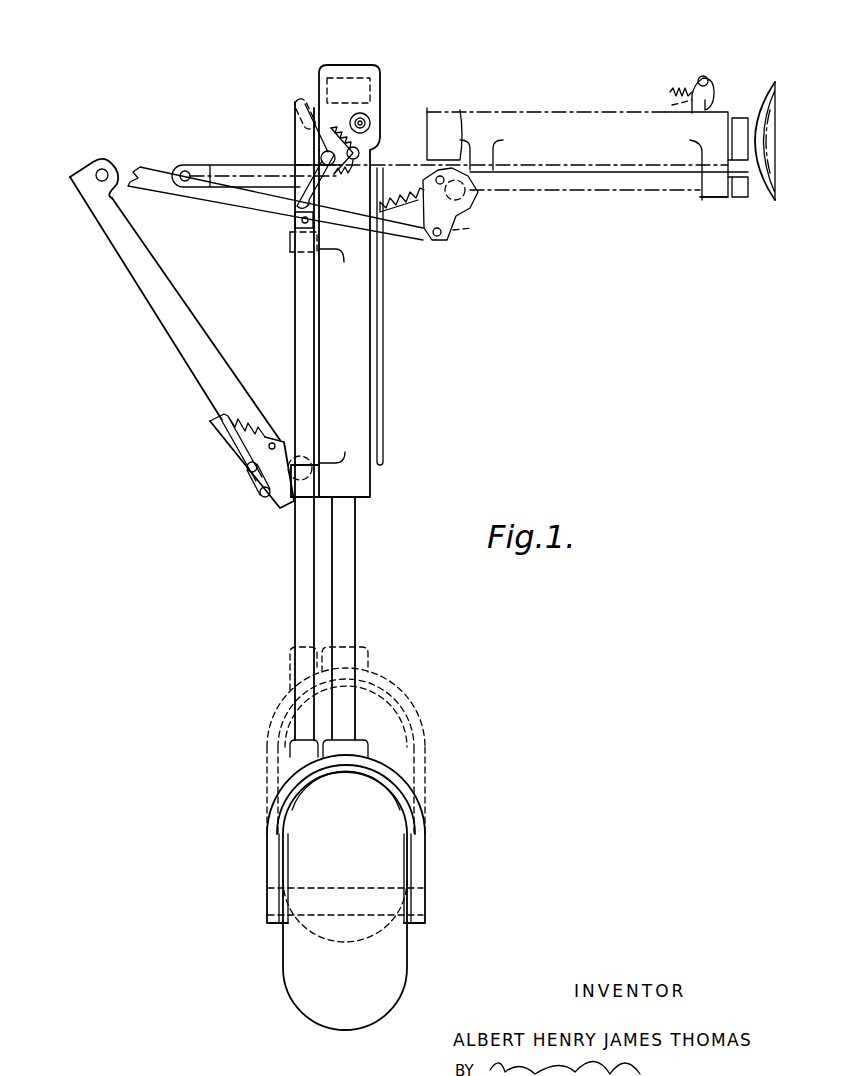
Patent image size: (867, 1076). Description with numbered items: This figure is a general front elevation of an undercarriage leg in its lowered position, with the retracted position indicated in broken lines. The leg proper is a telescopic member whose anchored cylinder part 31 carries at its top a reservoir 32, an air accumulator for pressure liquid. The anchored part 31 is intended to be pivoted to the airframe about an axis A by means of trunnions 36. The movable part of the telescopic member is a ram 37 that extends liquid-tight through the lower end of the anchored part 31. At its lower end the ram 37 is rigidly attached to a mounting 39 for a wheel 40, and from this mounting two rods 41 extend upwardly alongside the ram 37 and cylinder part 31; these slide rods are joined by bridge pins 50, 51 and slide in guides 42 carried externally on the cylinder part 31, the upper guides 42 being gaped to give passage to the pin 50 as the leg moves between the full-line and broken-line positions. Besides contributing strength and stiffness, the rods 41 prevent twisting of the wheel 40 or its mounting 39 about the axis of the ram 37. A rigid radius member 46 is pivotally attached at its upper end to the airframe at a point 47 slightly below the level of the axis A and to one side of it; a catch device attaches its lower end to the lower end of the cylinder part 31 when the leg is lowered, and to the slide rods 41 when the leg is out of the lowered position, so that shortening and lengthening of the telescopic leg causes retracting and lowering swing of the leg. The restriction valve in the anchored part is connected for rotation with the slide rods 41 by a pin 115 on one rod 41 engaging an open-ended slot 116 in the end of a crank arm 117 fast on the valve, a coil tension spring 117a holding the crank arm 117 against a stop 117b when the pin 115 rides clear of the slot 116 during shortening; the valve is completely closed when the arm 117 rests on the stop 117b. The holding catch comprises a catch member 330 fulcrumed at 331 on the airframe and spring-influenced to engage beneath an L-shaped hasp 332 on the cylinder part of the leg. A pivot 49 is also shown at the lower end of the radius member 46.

The anchored cylinder part 31 is at (586, 113).
The reservoir 32 is at (318, 83).
The trunnions 36 is at (371, 129).
The ram 37 is at (348, 590).
The mounting 39 is at (273, 870).
The wheel 40 is at (393, 947).
The rods 41 is at (297, 590).
The guides 42 is at (290, 248).
The radius member 46 is at (177, 328).
The pivot point 47 is at (108, 164).
The pivot 49 is at (263, 496).
The bridge pin 50 is at (442, 172).
The bridge pin 51 is at (292, 229).
The pin 115 is at (300, 197).
The open-ended slot 116 is at (290, 208).
The crank arm 117 is at (320, 160).
The coil tension spring 117a is at (362, 157).
The stop 117b is at (342, 91).
The catch member 330 is at (715, 100).
The fulcrum 331 is at (700, 79).
The L-shaped hasp 332 is at (670, 92).
The pivotal axis A is at (367, 116).